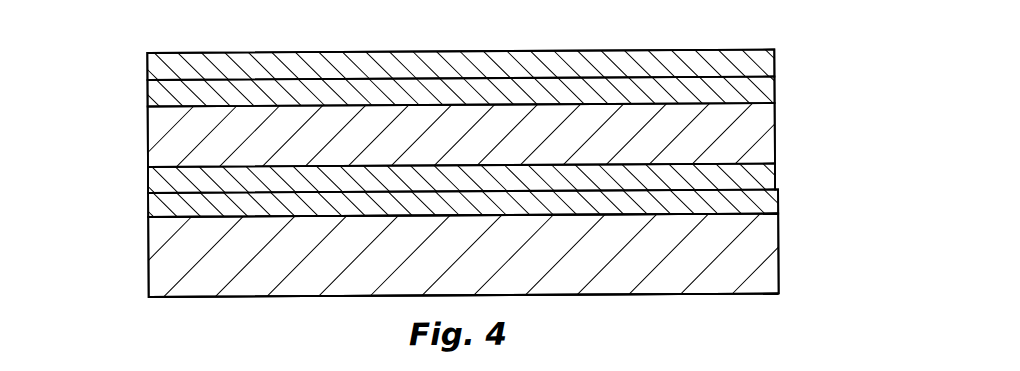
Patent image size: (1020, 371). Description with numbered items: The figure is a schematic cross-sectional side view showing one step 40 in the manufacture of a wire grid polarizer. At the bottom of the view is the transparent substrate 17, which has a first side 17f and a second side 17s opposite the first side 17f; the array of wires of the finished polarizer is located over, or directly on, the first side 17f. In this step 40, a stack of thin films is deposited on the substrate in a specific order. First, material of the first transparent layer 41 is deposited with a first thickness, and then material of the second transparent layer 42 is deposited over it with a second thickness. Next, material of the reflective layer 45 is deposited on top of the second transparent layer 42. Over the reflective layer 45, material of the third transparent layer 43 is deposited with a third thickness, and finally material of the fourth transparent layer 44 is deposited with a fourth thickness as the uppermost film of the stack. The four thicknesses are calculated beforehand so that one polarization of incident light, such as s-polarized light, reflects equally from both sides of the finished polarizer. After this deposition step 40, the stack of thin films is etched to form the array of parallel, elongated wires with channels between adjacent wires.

The step in manufacture 40 is at (98, 224).
The material of the fourth transparent layer 44 is at (456, 76).
The material of the third transparent layer 43 is at (456, 101).
The material of the reflective layer 45 is at (456, 145).
The material of the second transparent layer 42 is at (456, 186).
The material of the first transparent layer 41 is at (456, 211).
The transparent substrate 17 is at (459, 265).
The first side 17f is at (728, 217).
The second side 17s is at (758, 297).